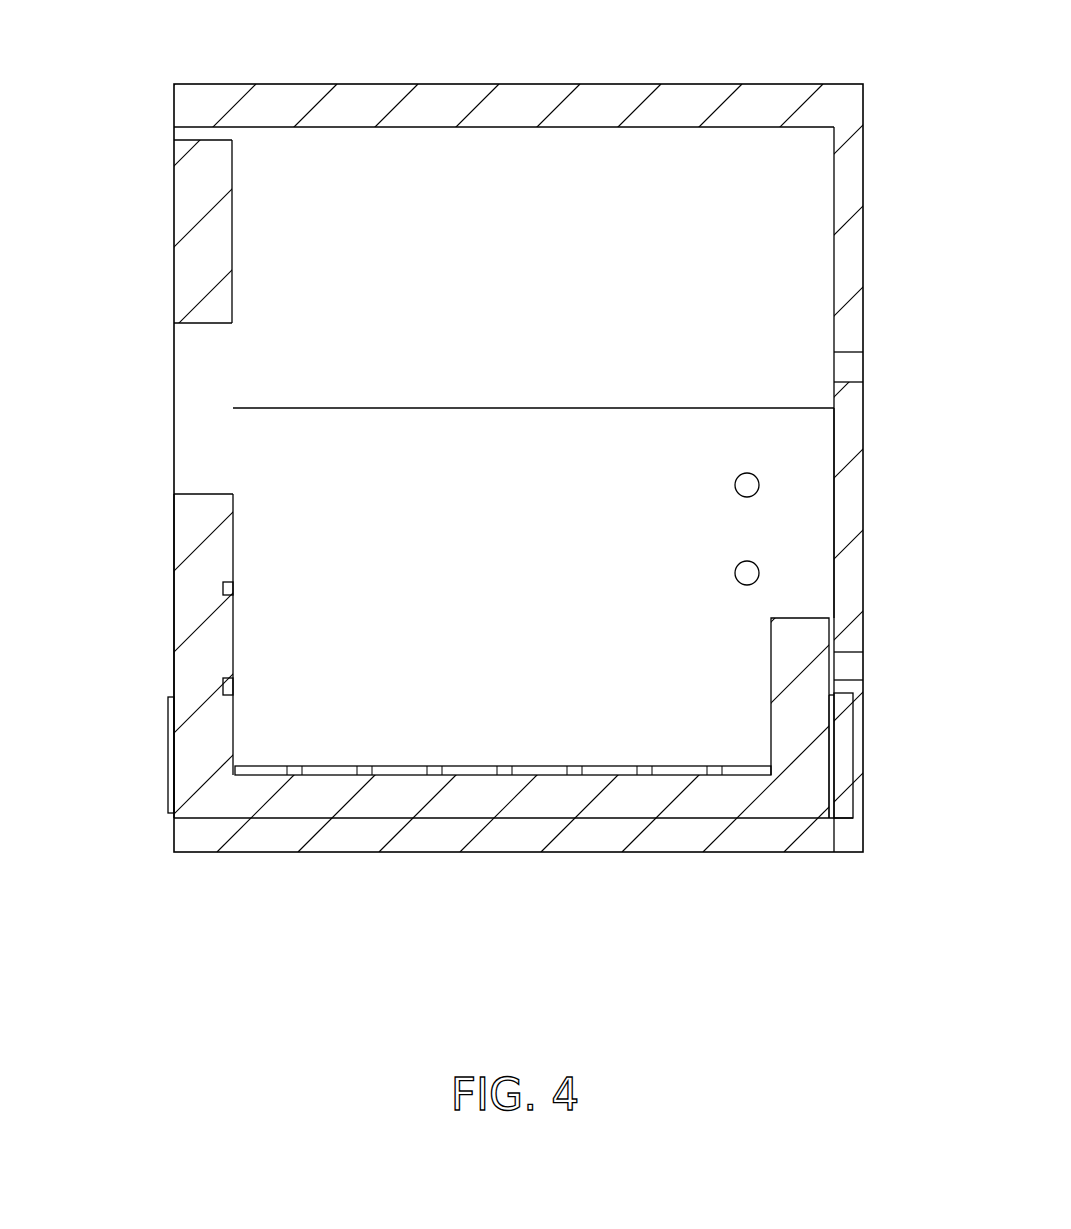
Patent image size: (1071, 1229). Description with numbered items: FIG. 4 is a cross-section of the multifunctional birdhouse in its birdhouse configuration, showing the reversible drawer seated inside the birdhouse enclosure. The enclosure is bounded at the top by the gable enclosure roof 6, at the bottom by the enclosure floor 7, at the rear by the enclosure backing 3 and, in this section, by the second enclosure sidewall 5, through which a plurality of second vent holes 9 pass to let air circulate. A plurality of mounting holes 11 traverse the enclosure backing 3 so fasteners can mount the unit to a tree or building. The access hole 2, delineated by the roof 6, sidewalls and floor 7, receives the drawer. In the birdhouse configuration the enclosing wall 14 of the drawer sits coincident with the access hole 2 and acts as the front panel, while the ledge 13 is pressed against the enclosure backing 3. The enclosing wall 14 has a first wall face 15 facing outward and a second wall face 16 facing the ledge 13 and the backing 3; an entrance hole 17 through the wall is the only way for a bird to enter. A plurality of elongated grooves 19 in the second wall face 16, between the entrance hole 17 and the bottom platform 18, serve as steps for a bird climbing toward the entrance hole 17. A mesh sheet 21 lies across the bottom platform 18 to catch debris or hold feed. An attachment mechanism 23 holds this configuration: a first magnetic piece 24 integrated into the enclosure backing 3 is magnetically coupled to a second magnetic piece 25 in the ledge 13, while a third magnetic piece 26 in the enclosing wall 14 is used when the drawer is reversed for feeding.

The access hole 2 is at (176, 134).
The enclosure backing 3 is at (853, 503).
The second enclosure sidewall 5 is at (823, 570).
The gable enclosure roof 6 is at (613, 92).
The enclosure floor 7 is at (504, 846).
The plurality of second vent holes 9 is at (735, 487).
The plurality of mounting holes 11 is at (860, 367).
The ledge 13 is at (778, 645).
The enclosing wall 14 is at (180, 583).
The first wall face 15 is at (174, 553).
The second wall face 16 is at (237, 506).
The entrance hole 17 is at (176, 405).
The bottom platform 18 is at (553, 778).
The plurality of elongated grooves 19 is at (235, 588).
The mesh sheet 21 is at (485, 765).
The attachment mechanism 23 is at (514, 755).
The first magnetic piece 24 is at (847, 752).
The second magnetic piece 25 is at (832, 707).
The third magnetic piece 26 is at (172, 760).